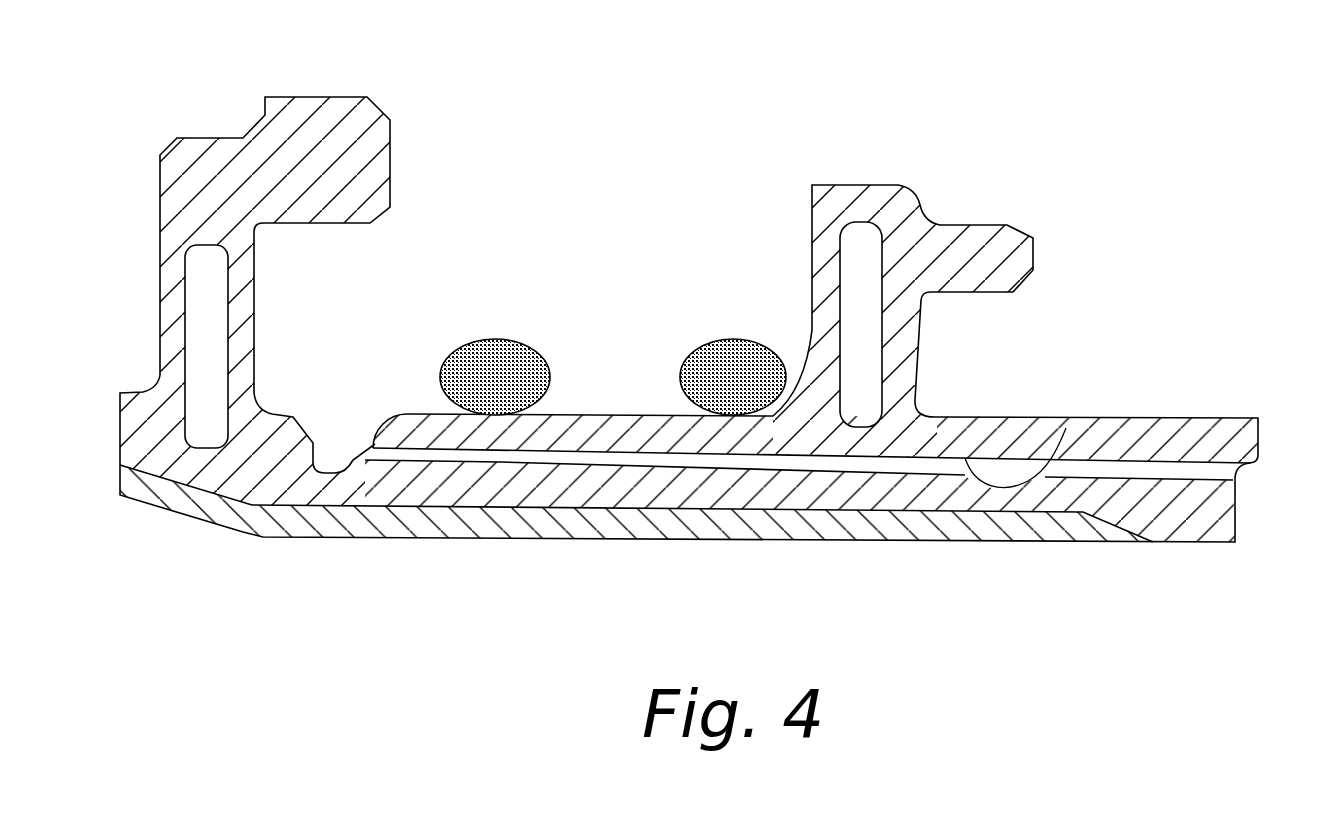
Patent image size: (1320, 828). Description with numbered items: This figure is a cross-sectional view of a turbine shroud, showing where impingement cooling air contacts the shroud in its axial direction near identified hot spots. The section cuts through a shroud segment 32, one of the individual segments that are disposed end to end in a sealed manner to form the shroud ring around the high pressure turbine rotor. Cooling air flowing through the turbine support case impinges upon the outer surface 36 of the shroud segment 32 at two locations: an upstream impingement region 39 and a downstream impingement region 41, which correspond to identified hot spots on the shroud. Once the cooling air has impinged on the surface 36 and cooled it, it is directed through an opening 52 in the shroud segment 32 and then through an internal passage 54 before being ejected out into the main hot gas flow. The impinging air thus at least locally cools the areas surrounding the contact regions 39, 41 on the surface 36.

The shroud segment 32 is at (1100, 240).
The outer surface 36 is at (611, 416).
The upstream impingement region 39 is at (485, 338).
The downstream impingement region 41 is at (719, 340).
The opening 52 is at (392, 454).
The internal passage 54 is at (1066, 428).